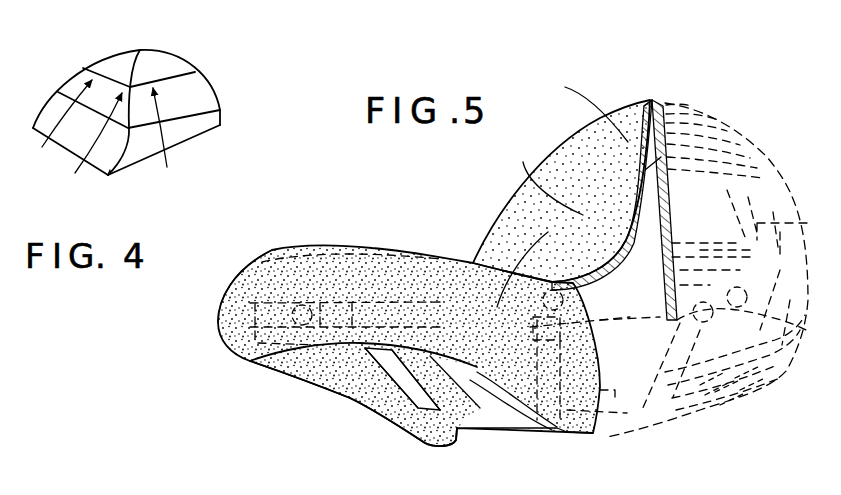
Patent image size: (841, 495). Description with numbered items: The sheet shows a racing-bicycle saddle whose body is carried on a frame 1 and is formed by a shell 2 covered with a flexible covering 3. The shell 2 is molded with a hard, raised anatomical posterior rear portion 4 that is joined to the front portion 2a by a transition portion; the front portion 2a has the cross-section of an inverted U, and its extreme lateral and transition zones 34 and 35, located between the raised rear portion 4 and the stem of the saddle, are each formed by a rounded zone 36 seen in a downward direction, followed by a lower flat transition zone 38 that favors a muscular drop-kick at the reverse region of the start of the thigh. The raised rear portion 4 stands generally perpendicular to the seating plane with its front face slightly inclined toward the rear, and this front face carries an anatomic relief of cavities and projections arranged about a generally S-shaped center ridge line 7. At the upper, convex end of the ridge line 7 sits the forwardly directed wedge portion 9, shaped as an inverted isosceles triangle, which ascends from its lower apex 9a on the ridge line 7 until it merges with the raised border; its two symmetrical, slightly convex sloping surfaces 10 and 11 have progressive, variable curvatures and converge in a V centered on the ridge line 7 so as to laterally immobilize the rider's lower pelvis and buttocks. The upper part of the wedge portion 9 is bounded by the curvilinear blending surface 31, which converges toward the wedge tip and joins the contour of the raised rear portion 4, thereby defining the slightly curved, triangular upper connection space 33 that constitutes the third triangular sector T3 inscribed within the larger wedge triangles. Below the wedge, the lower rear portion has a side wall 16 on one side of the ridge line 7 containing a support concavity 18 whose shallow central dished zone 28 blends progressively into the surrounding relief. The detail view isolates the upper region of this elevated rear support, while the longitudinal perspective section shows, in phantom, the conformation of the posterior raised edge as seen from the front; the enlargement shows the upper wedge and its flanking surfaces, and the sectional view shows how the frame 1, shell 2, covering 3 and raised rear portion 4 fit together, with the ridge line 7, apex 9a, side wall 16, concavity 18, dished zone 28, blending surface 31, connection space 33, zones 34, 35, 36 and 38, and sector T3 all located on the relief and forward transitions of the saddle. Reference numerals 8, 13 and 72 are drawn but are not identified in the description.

In FIG. 5, the frame 1 is at (477, 437).
In FIG. 5, the shell 2 is at (327, 233).
In FIG. 5, the front portion 2a is at (265, 258).
In FIG. 5, the flexible covering 3 is at (373, 250).
In FIG. 5, the raised anatomical posterior rear portion 4 is at (496, 208).
In FIG. 5, the center ridge line 7 is at (627, 233).
In FIG. 5, the cover edge 8 is at (587, 106).
In FIG. 4, the wedge portion 9 is at (92, 143).
In FIG. 5, the wedge portion 9 is at (631, 96).
In FIG. 4, the apex 9a is at (108, 176).
In FIG. 4, the sloping surface 10 is at (174, 140).
In FIG. 4, the sloping surface 11 is at (57, 123).
In FIG. 5, the rear support shell 13 is at (668, 153).
In FIG. 5, the side wall 16 is at (544, 172).
In FIG. 5, the concavity 18 is at (508, 275).
In FIG. 5, the dished zone 28 is at (633, 233).
In FIG. 4, the curvilinear blending surface 31 is at (157, 60).
In FIG. 5, the upper connection space 33 is at (652, 99).
In FIG. 5, the lateral and transition zone 34 is at (567, 433).
In FIG. 5, the lateral and transition zone 35 is at (378, 408).
In FIG. 5, the rounded zone 36 is at (632, 337).
In FIG. 5, the lower flat transition zone 38 is at (580, 378).
In FIG. 4, the dome panel 72 is at (207, 107).
In FIG. 4, the third triangular sector T3 is at (113, 63).